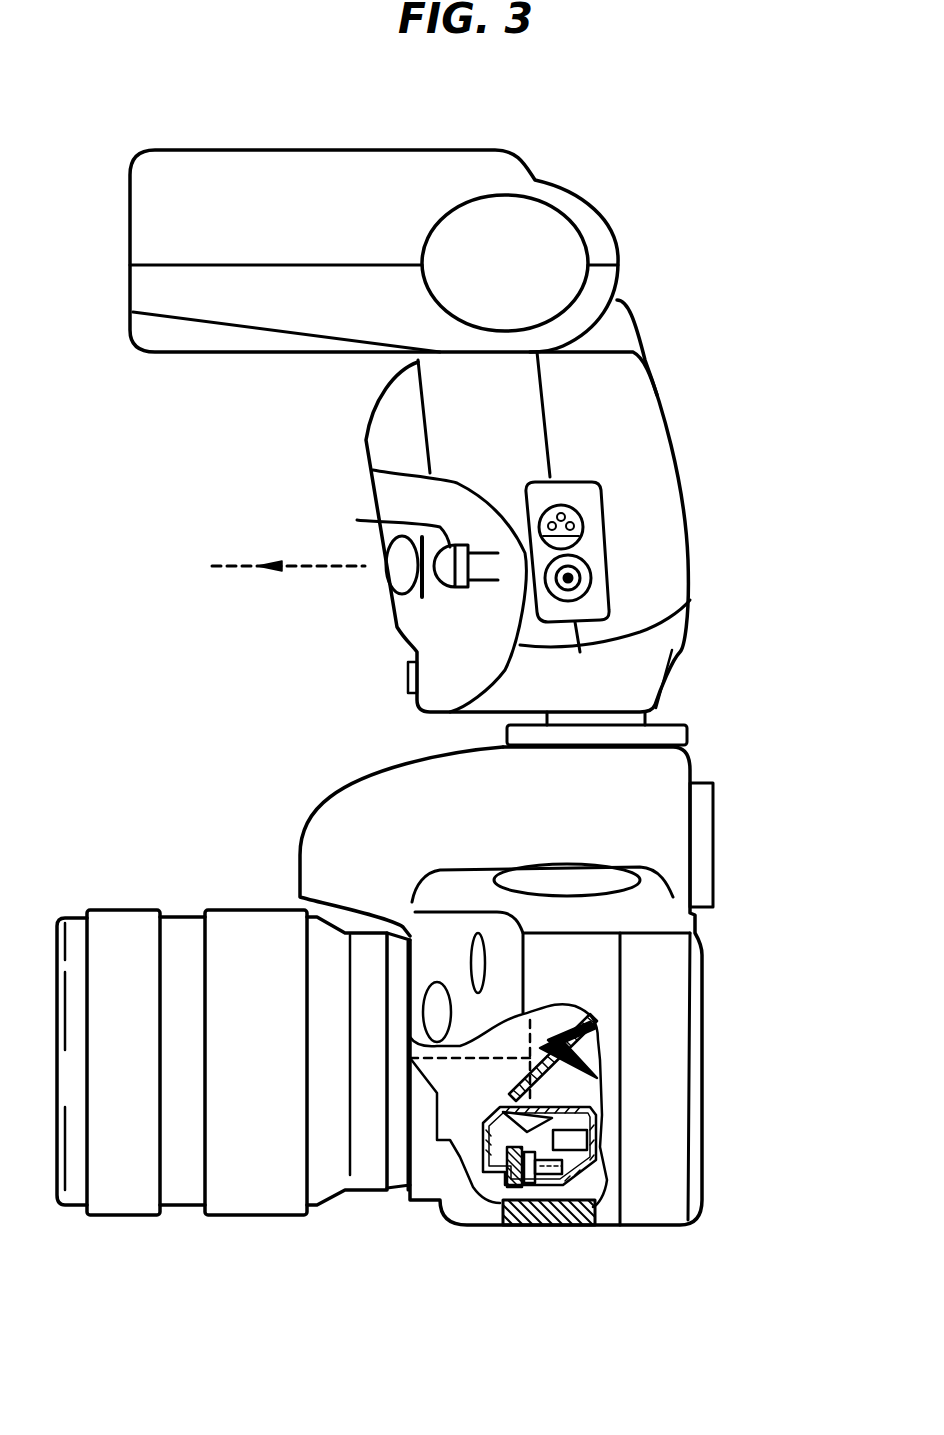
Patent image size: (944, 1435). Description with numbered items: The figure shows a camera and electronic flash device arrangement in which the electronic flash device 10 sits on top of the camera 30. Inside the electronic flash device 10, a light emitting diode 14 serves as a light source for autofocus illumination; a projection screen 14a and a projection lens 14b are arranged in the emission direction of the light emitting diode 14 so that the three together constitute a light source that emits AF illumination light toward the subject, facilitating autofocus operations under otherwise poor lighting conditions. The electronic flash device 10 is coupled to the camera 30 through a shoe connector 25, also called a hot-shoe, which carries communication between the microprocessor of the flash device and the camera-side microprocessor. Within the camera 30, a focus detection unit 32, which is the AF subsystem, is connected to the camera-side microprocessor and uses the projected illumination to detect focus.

The electronic flash device 10 is at (413, 160).
The light emitting diode 14 is at (387, 588).
The projection screen 14a is at (415, 617).
The projection lens 14b is at (386, 590).
The shoe connector 25 is at (688, 728).
The camera 30 is at (385, 1025).
The focus detection unit 32 is at (555, 1172).